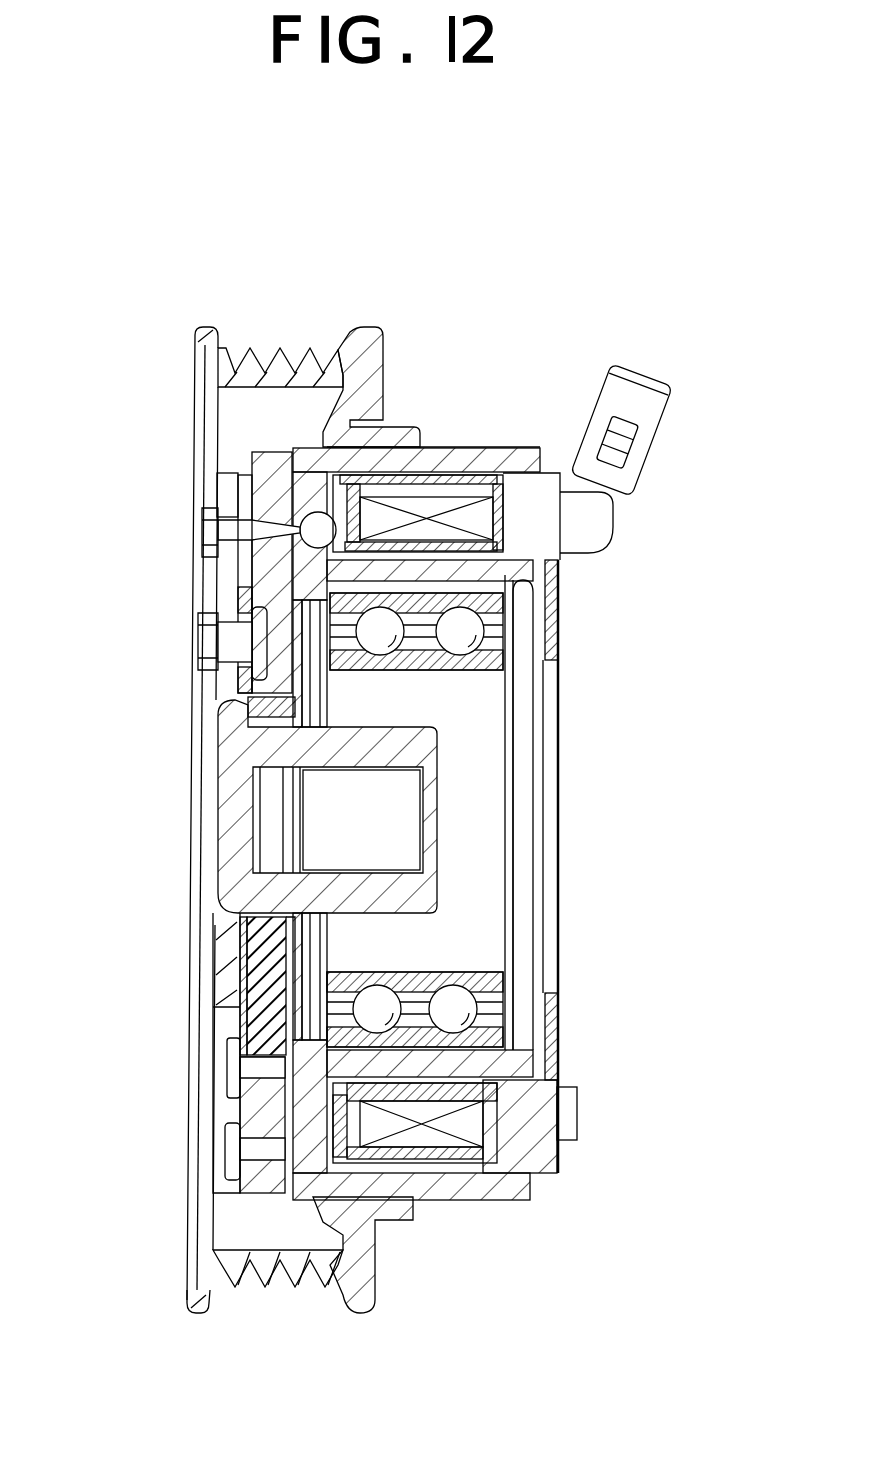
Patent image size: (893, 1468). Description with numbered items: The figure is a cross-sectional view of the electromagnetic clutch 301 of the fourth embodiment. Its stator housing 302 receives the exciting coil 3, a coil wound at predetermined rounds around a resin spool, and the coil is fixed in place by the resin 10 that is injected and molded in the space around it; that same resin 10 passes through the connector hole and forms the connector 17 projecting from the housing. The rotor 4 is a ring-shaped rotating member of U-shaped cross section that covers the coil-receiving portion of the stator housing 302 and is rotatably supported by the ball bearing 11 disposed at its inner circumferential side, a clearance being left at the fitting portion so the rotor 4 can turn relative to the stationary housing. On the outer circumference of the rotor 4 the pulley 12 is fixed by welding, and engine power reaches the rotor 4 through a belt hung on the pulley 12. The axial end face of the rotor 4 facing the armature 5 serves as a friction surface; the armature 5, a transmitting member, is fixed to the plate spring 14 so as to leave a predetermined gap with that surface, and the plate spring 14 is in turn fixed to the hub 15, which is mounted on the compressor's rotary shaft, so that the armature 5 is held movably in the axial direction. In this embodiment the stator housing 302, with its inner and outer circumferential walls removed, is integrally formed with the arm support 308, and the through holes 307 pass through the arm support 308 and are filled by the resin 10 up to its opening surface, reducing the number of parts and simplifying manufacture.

The exciting coil 3 is at (478, 515).
The rotor 4 is at (510, 458).
The armature 5 is at (241, 462).
The resin 10 is at (446, 452).
The ball bearing 11 is at (485, 631).
The pulley 12 is at (203, 325).
The plate spring 14 is at (243, 1015).
The hub 15 is at (243, 913).
The connector 17 is at (652, 407).
The electromagnetic clutch 301 is at (468, 302).
The stator housing 302 is at (527, 1097).
The through holes 307 is at (560, 1127).
The arm support 308 is at (552, 598).